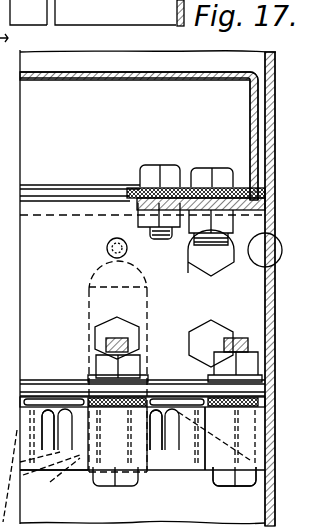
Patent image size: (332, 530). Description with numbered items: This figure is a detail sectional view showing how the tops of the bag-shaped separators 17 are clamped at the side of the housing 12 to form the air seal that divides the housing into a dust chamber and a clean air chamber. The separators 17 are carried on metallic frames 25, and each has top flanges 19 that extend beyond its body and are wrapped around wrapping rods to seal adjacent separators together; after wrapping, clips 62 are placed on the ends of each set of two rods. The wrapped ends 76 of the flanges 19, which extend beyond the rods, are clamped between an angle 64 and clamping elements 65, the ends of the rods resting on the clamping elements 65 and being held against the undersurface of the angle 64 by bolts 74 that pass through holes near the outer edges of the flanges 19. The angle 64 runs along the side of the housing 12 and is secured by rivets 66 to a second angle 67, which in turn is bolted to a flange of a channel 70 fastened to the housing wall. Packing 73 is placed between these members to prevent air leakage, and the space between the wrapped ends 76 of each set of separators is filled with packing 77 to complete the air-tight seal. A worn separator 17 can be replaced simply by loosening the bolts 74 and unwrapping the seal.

The channel 70 is at (137, 79).
The packing 73 is at (108, 190).
The rivets 66 is at (107, 247).
The frames 25 is at (150, 299).
The bolts 74 is at (112, 330).
The angles 64 is at (63, 385).
The wrapped ends of the flanges 76 is at (40, 384).
The housing 12 is at (276, 317).
The flanges 19 is at (78, 456).
The separators 17 is at (82, 511).
The packing 77 is at (134, 464).
The angle 67 is at (193, 448).
The clamping elements 65 is at (209, 468).
The clips 62 is at (204, 475).